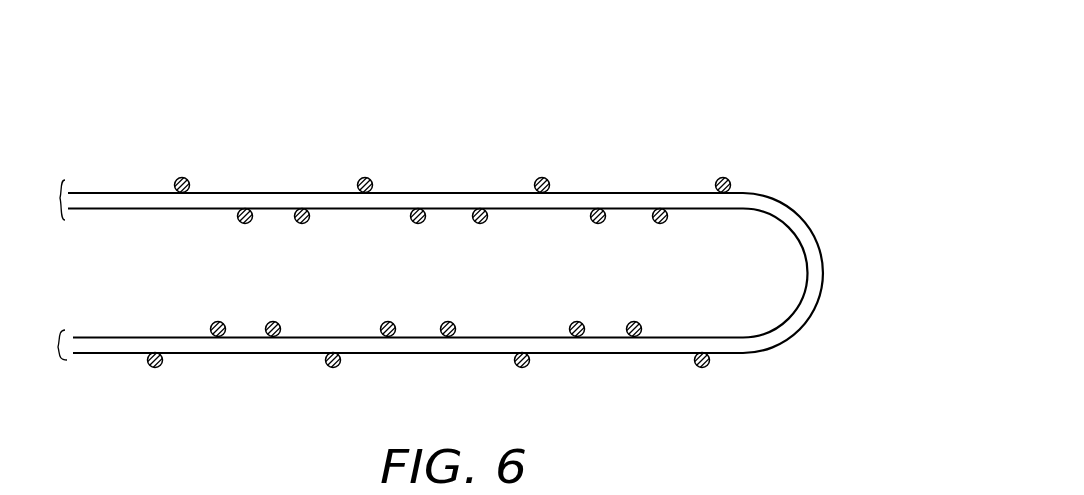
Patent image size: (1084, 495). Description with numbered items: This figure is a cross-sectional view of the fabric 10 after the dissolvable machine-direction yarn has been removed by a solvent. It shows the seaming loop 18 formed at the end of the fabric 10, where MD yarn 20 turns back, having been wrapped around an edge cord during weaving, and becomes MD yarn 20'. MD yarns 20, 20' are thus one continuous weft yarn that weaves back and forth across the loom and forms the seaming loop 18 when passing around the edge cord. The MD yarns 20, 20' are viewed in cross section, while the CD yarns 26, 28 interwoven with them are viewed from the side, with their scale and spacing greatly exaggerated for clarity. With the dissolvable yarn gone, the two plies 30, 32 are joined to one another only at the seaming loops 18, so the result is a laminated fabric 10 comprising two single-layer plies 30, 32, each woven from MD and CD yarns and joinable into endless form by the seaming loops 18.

The fabric 10 is at (793, 152).
The seaming loop 18 is at (815, 272).
The MD yarn 20 is at (405, 183).
The MD yarn 20' is at (408, 377).
The CD yarn 26 is at (189, 180).
The CD yarn 28 is at (392, 323).
The ply 30 is at (60, 198).
The ply 32 is at (58, 347).